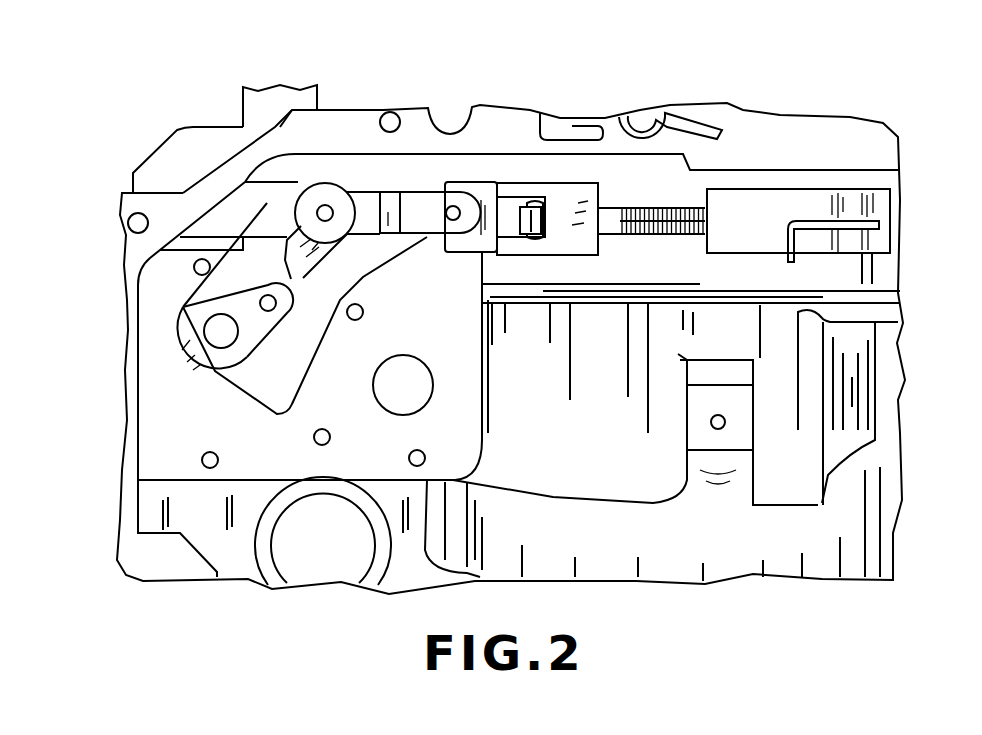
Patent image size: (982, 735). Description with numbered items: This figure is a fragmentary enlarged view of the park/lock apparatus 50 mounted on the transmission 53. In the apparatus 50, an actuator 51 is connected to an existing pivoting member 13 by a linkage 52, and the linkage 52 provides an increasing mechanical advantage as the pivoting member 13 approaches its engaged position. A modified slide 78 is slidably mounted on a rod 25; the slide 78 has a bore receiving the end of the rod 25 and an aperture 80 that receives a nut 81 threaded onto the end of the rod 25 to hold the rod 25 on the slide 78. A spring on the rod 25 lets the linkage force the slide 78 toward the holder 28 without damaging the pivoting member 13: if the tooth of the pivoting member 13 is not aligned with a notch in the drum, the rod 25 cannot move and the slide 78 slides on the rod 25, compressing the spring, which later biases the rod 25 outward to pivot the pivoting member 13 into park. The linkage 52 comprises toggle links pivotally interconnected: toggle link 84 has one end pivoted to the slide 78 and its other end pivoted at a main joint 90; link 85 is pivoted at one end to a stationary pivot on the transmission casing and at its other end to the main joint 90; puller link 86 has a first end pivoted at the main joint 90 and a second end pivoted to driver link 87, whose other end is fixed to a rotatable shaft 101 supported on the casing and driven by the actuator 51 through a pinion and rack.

The pivoting member 13 is at (823, 190).
The rod 25 is at (660, 238).
The holder 28 is at (747, 212).
The apparatus 50 is at (520, 103).
The actuator 51 is at (318, 97).
The linkage 52 is at (365, 177).
The transmission 53 is at (643, 120).
The slide 78 is at (570, 256).
The aperture 80 is at (524, 196).
The nut 81 is at (537, 238).
The toggle link 84 is at (390, 212).
The link 85 is at (267, 203).
The puller link 86 is at (285, 262).
The driver link 87 is at (252, 348).
The main joint 90 is at (325, 212).
The rotatable shaft 101 is at (221, 331).